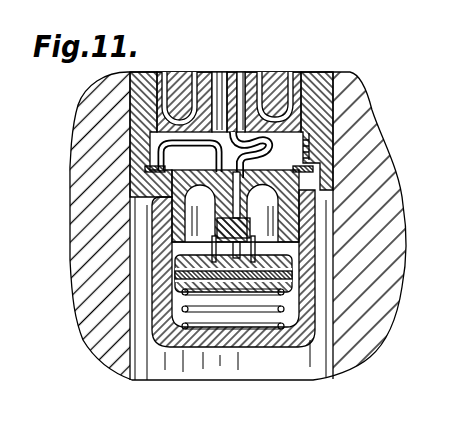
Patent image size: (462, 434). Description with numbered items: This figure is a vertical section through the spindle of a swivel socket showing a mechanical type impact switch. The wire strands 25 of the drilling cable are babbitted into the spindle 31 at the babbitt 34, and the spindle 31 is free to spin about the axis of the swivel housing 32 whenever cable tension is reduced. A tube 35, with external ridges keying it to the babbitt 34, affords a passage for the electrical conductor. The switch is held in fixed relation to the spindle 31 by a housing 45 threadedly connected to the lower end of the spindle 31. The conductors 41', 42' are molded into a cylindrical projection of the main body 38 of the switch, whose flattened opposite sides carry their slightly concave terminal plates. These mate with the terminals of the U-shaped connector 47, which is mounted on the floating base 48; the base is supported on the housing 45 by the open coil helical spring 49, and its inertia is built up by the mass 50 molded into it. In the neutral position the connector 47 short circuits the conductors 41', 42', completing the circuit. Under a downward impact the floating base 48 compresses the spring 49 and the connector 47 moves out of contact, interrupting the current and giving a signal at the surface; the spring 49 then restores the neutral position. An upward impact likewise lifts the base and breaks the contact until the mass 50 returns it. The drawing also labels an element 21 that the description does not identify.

The tube 21 is at (240, 72).
The wire strands 25 is at (200, 72).
The spindle 31 is at (316, 88).
The swivel housing 32 is at (312, 158).
The babbitt 34 is at (273, 72).
The tube 35 is at (220, 72).
The main body 38 is at (300, 178).
The conductor 41' is at (287, 168).
The conductor 42' is at (231, 217).
The housing 45 is at (303, 322).
The U-shaped connector 47 is at (284, 222).
The floating base 48 is at (176, 266).
The open coil helical spring 49 is at (218, 322).
The mass 50 is at (182, 286).